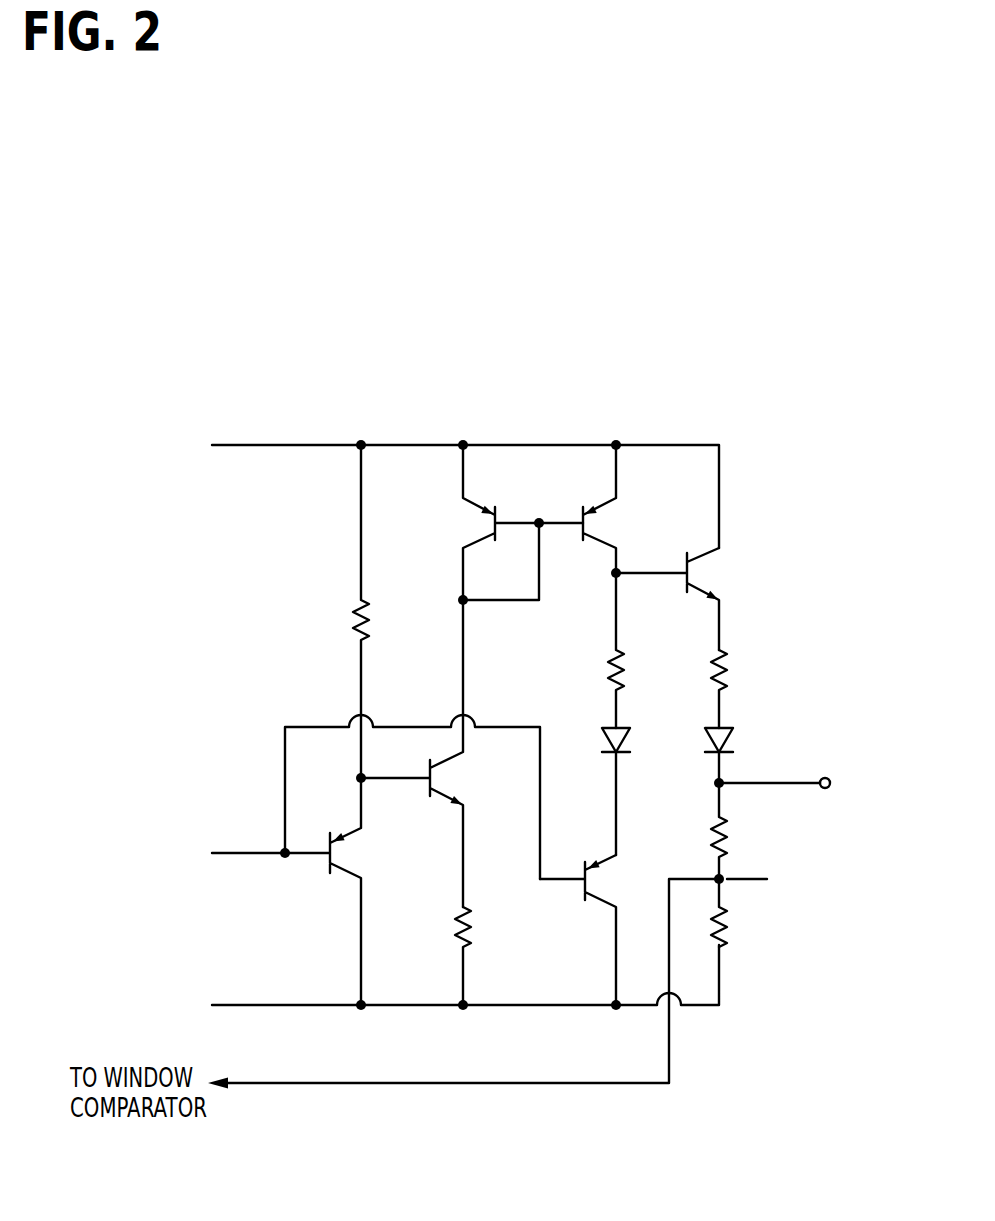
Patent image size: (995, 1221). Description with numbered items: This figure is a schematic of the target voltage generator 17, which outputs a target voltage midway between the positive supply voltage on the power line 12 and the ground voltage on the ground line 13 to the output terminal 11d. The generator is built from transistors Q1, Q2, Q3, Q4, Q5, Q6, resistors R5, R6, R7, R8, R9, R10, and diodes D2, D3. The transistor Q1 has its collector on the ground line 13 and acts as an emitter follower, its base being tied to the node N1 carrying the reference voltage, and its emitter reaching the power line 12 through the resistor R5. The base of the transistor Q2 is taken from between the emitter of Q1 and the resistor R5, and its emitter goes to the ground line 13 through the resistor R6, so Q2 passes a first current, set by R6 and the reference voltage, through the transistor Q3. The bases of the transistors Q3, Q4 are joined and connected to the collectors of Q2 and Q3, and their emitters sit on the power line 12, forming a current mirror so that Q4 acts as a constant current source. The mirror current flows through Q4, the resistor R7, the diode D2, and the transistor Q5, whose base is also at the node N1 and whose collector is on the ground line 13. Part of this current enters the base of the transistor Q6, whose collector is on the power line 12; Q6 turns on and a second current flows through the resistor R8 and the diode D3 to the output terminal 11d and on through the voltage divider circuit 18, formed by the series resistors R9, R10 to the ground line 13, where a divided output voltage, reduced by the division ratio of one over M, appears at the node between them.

The power line 12 is at (268, 443).
The ground line 13 is at (291, 1012).
The target voltage generator 17 is at (470, 422).
The voltage divider circuit 18 is at (775, 892).
The output terminal 11d is at (828, 774).
The node N1 is at (245, 847).
The transistor Q1 is at (340, 838).
The transistor Q2 is at (445, 768).
The transistor Q3 is at (470, 512).
The transistor Q4 is at (596, 512).
The transistor Q5 is at (598, 886).
The transistor Q6 is at (702, 556).
The resistor R5 is at (354, 616).
The resistor R6 is at (471, 930).
The resistor R7 is at (624, 666).
The resistor R8 is at (727, 666).
The resistor R9 is at (727, 832).
The resistor R10 is at (727, 936).
The diode D2 is at (626, 735).
The diode D3 is at (729, 735).